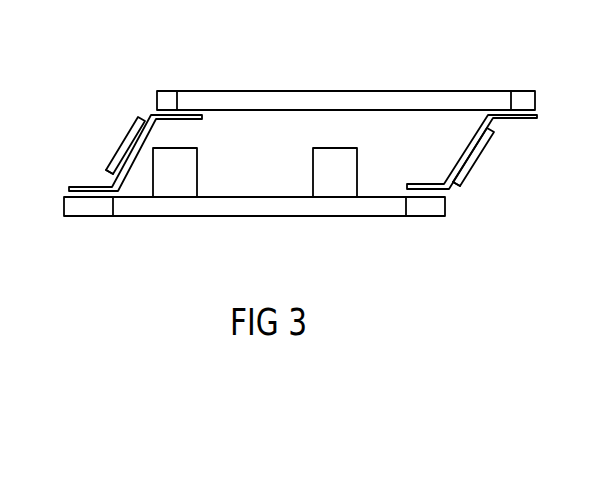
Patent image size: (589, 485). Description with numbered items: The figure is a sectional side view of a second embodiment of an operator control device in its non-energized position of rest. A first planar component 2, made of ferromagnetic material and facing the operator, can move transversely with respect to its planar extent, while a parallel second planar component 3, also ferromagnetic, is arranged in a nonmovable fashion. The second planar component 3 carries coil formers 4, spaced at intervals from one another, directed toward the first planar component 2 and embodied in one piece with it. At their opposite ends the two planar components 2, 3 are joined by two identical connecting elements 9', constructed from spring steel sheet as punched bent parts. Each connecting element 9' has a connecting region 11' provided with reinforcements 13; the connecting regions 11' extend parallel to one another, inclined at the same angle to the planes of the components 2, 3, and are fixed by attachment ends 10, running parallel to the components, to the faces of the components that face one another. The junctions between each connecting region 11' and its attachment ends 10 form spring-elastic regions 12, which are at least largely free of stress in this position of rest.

The first planar component 2 is at (392, 102).
The second planar component 3 is at (261, 203).
The coil formers 4 is at (174, 160).
The connecting elements 9' is at (296, 153).
The attachment ends 10 is at (176, 112).
The connecting regions 11' is at (275, 193).
The spring-elastic regions 12 is at (154, 117).
The reinforcements 13 is at (137, 138).